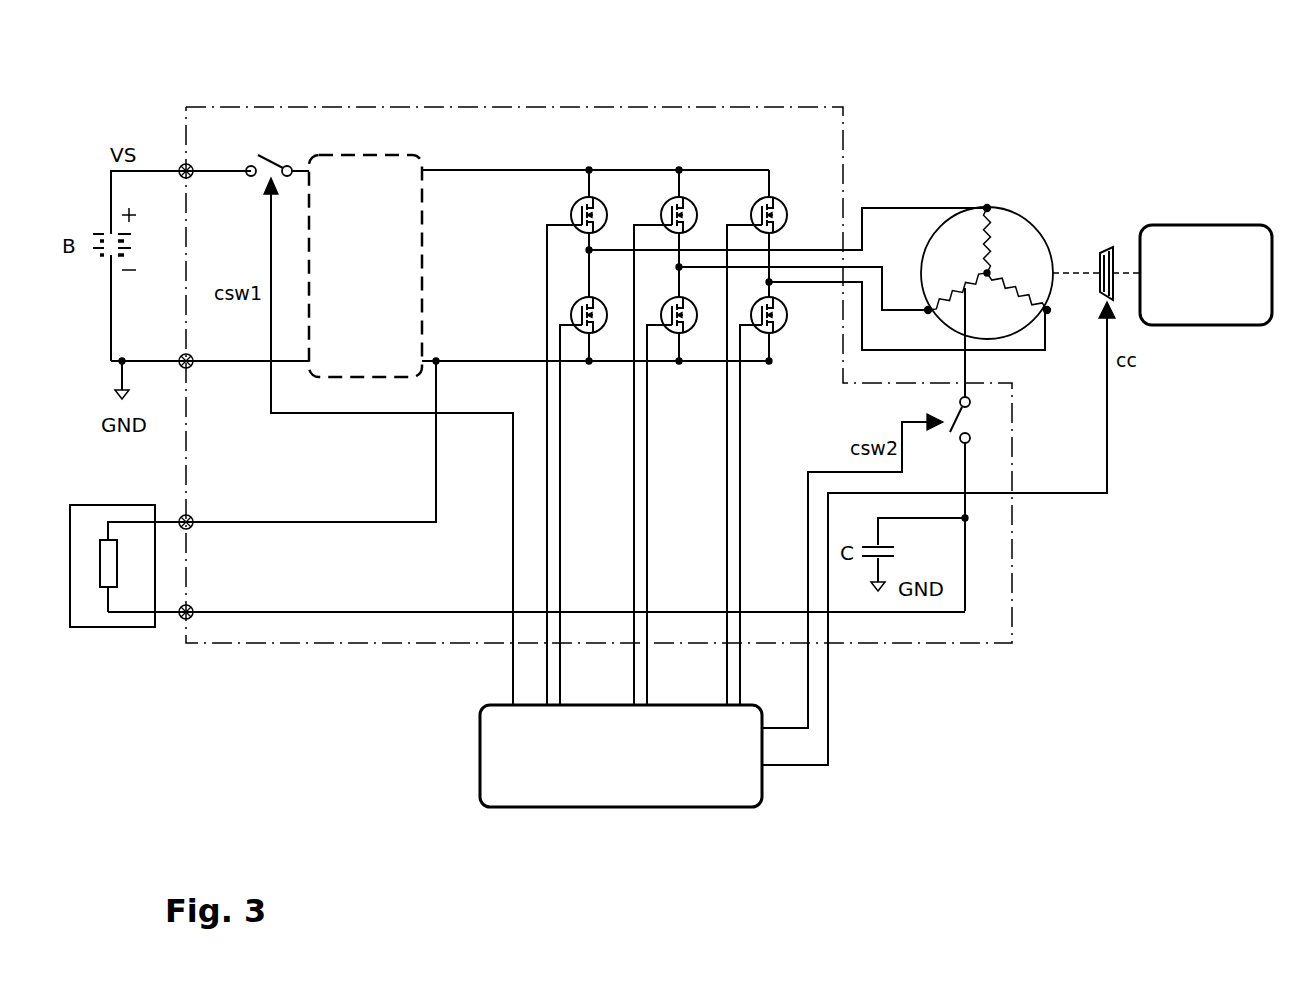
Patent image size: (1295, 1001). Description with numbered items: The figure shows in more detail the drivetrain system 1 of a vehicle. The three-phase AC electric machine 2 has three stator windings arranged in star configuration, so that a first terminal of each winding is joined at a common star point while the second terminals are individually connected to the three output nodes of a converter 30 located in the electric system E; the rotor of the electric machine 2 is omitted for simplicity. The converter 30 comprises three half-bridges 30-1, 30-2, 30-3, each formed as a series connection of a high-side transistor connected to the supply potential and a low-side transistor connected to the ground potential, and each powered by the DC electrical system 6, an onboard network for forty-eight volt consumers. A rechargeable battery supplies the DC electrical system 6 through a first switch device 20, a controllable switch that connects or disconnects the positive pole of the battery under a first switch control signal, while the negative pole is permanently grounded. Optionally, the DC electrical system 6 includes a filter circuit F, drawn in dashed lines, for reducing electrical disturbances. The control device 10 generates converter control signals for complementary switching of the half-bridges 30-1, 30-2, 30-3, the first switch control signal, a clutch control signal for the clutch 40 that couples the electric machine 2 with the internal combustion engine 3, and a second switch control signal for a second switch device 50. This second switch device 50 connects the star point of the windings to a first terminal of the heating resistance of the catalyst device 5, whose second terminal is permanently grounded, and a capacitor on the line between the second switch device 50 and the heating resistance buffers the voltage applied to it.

The drivetrain system 1 is at (235, 50).
The electric system E is at (336, 107).
The DC electrical system 6 is at (472, 160).
The converter 30 is at (696, 126).
The first half-bridge 30-1 is at (616, 216).
The second half-bridge 30-2 is at (704, 216).
The third half-bridge 30-3 is at (794, 228).
The AC electric machine 2 is at (1021, 178).
The clutch 40 is at (1097, 238).
The internal combustion engine 3 is at (1206, 275).
The first switch device 20 is at (245, 195).
The catalyst device 5 is at (144, 490).
The control device 10 is at (621, 756).
The second switch device 50 is at (994, 406).
The filter circuit F is at (365, 266).